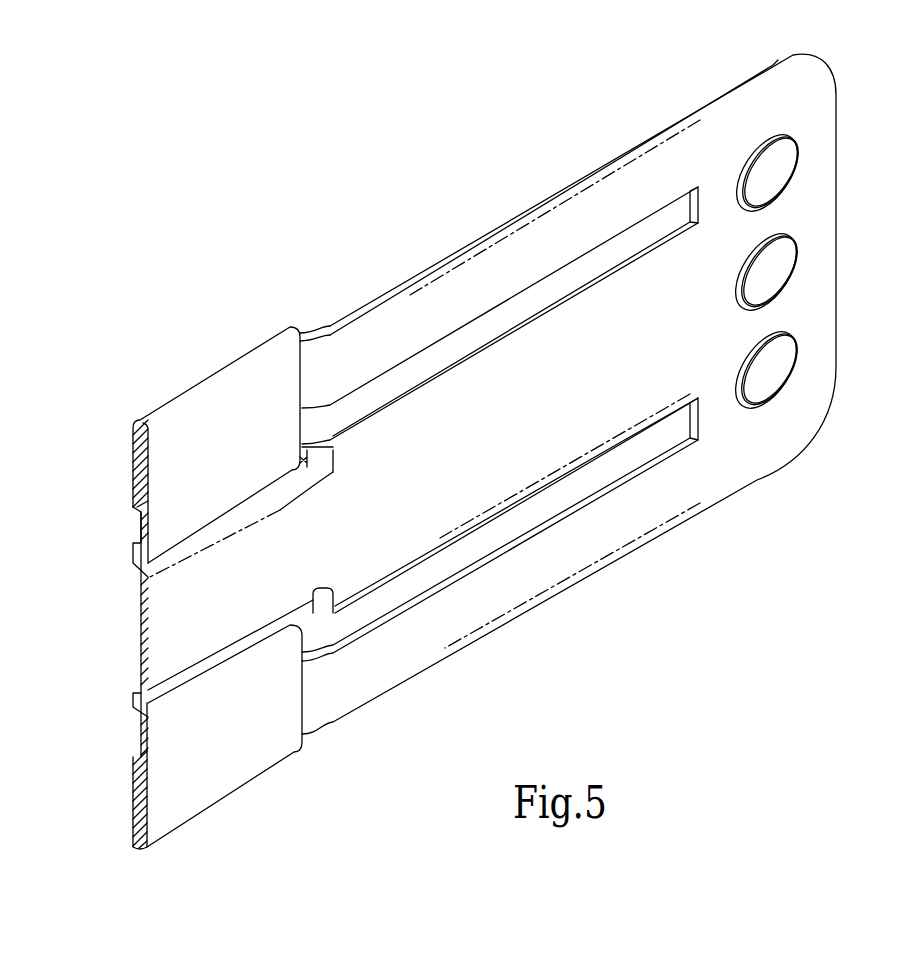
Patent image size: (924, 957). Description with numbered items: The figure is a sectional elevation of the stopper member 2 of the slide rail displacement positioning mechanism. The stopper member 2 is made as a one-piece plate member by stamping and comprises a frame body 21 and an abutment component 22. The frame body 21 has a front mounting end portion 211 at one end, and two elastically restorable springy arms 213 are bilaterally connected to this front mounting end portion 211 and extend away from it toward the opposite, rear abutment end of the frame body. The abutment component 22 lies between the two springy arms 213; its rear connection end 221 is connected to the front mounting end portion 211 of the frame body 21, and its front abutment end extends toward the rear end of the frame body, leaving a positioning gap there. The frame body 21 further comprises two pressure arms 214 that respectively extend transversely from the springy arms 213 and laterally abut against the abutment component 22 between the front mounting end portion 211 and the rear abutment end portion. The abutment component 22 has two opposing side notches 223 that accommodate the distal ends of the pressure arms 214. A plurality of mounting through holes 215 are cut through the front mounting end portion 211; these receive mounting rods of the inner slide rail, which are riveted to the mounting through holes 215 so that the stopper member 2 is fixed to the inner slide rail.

The stopper member 2 is at (474, 451).
The frame body 21 is at (562, 603).
The abutment component 22 is at (500, 337).
The front mounting end portion 211 is at (790, 427).
The springy arms 213 is at (377, 330).
The pressure arms 214 is at (160, 470).
The mounting through holes 215 is at (787, 260).
The rear connection end 221 is at (650, 387).
The side notches 223 is at (307, 460).